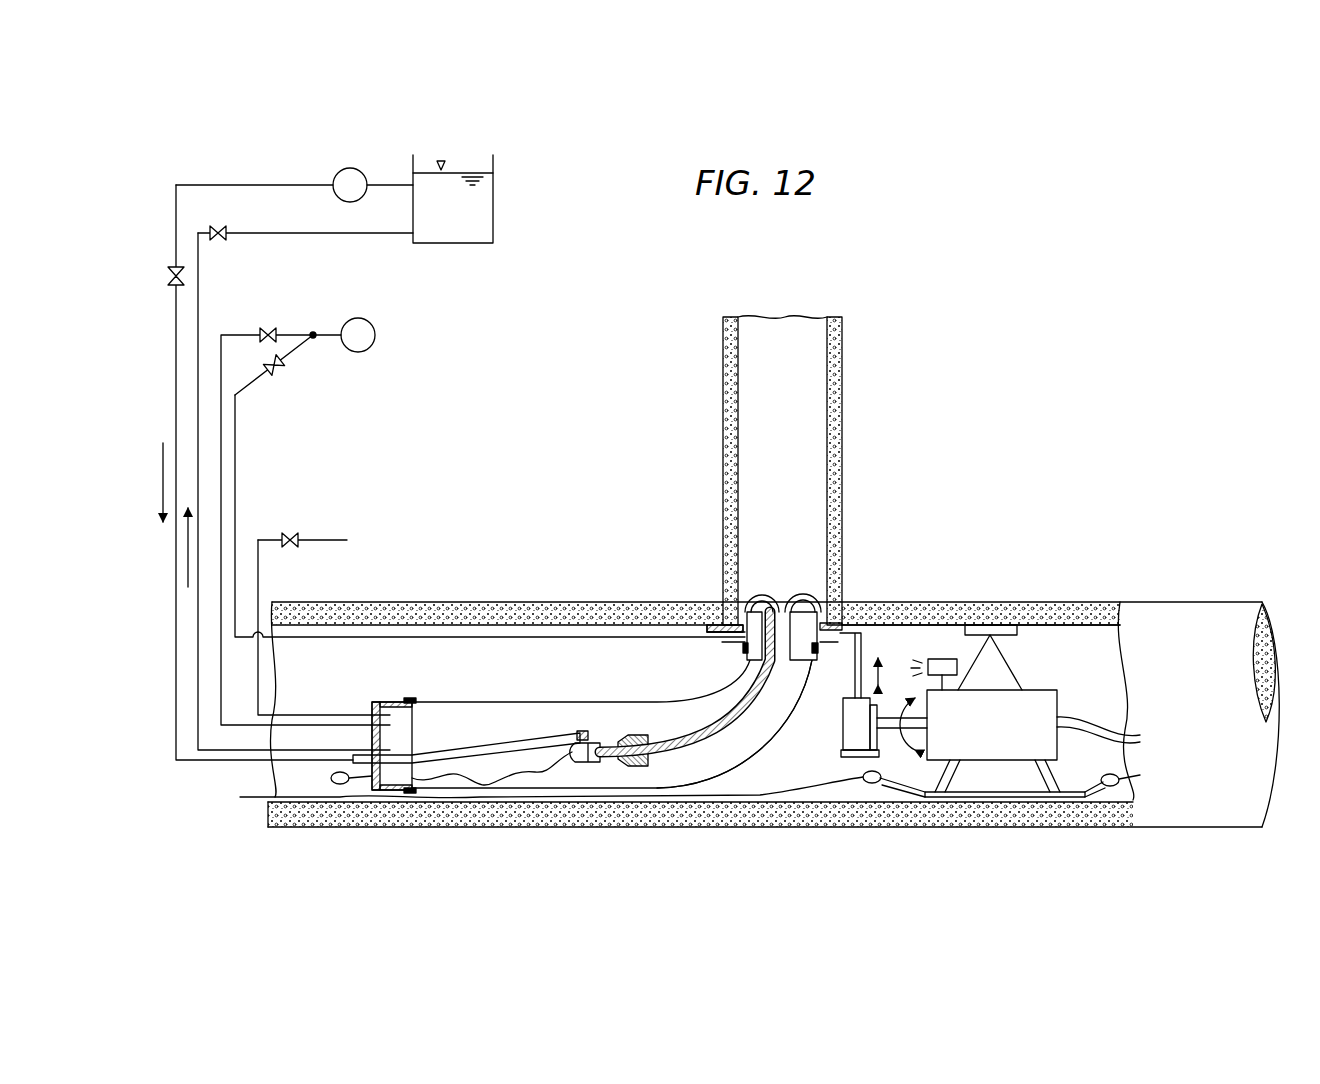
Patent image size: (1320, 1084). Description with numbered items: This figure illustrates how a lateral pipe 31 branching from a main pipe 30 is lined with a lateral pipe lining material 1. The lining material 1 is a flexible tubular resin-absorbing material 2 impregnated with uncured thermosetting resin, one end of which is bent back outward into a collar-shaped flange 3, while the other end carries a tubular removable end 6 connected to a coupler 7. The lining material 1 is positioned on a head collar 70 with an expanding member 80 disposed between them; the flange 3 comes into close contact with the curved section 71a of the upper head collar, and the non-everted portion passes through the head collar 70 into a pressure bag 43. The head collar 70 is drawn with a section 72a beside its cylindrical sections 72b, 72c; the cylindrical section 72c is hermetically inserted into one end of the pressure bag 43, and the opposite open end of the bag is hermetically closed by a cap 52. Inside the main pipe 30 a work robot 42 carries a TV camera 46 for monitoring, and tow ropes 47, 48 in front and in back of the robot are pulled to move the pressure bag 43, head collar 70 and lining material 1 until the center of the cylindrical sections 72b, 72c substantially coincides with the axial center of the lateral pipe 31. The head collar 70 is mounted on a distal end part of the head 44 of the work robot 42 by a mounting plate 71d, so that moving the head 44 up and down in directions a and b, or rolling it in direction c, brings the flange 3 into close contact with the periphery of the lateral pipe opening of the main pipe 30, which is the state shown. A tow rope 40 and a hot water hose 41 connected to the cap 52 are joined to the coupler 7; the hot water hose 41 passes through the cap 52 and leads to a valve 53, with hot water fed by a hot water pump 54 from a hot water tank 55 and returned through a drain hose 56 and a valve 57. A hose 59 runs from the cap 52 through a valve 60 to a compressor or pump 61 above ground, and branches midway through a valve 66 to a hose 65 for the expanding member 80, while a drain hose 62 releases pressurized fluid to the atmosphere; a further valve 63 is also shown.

The lateral pipe lining material 1 is at (786, 590).
The tubular resin-absorbing material 2 is at (760, 698).
The flange 3 is at (850, 605).
The removable end 6 is at (635, 766).
The coupler 7 is at (585, 762).
The main pipe 30 is at (1108, 812).
The lateral pipe 31 is at (842, 428).
The tow rope 40 is at (455, 777).
The hot water hose 41 is at (200, 765).
The work robot 42 is at (1043, 698).
The pressure bag 43 is at (505, 700).
The head 44 is at (850, 783).
The TV camera 46 is at (938, 659).
The tow rope 47 is at (760, 795).
The tow rope 48 is at (1133, 780).
The cap 52 is at (385, 700).
The valve 53 is at (172, 268).
The hot water pump 54 is at (350, 168).
The hot water tank 55 is at (472, 170).
The drain hose 56 is at (199, 262).
The valve 57 is at (217, 222).
The hose 59 is at (228, 328).
The valve 60 is at (265, 325).
The compressor or pump 61 is at (375, 333).
The drain hose 62 is at (256, 548).
The valve 63 is at (288, 532).
The hose 65 is at (238, 432).
The valve 66 is at (280, 365).
The head collar 70 is at (771, 628).
The curved section 71a is at (705, 605).
The mounting plate 71d is at (845, 648).
The holding block 72a is at (728, 645).
The cylindrical section 72b is at (805, 600).
The cylindrical section 72c is at (790, 668).
The expanding member 80 is at (750, 597).